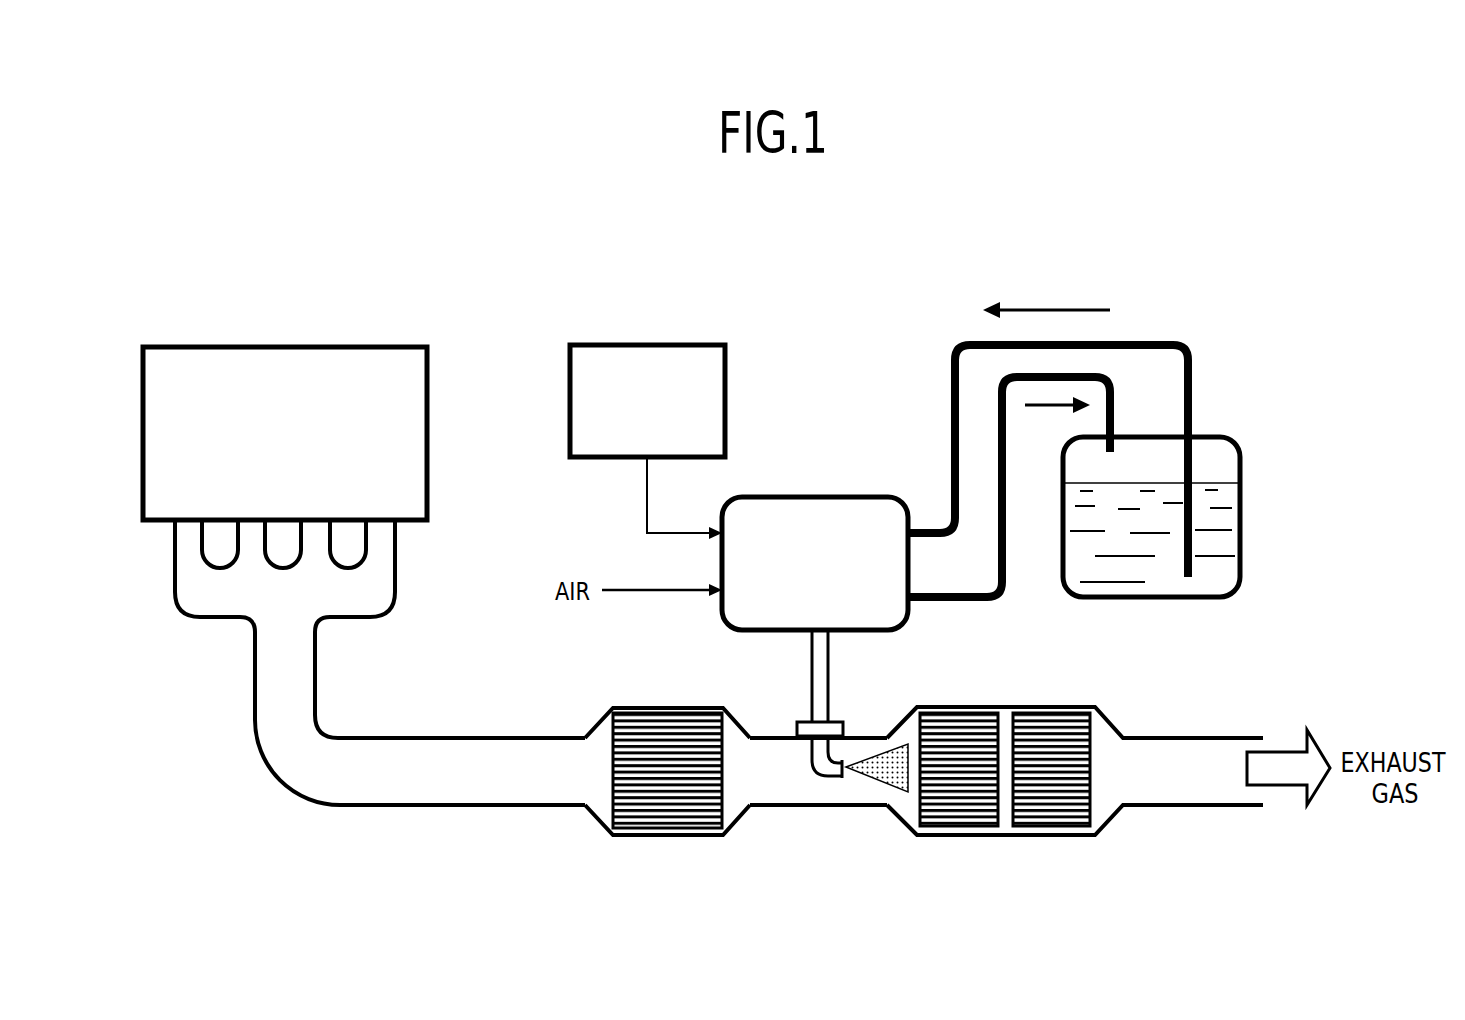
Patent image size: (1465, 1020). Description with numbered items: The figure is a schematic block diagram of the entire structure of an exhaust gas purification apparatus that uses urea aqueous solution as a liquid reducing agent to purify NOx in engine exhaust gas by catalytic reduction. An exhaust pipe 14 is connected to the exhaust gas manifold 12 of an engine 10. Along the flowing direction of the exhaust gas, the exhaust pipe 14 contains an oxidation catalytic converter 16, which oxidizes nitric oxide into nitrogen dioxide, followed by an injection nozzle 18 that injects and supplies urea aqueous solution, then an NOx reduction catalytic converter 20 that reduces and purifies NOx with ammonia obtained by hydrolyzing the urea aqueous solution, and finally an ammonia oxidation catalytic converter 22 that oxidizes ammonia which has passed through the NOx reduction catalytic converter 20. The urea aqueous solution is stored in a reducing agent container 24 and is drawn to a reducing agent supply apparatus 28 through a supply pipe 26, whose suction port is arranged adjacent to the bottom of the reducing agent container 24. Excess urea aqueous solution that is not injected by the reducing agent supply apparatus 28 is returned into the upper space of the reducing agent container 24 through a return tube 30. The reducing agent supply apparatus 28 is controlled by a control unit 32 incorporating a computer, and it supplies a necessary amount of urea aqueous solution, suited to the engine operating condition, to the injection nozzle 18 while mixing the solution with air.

The engine 10 is at (312, 346).
The exhaust gas manifold 12 is at (173, 575).
The exhaust pipe 14 is at (413, 738).
The oxidation catalytic converter 16 is at (667, 815).
The injection nozzle 18 is at (825, 772).
The NOx reduction catalytic converter 20 is at (973, 817).
The ammonia oxidation catalytic converter 22 is at (1062, 815).
The reducing agent container 24 is at (1245, 471).
The supply pipe 26 is at (1190, 347).
The reducing agent supply apparatus 28 is at (858, 497).
The return tube 30 is at (963, 600).
The control unit 32 is at (645, 343).